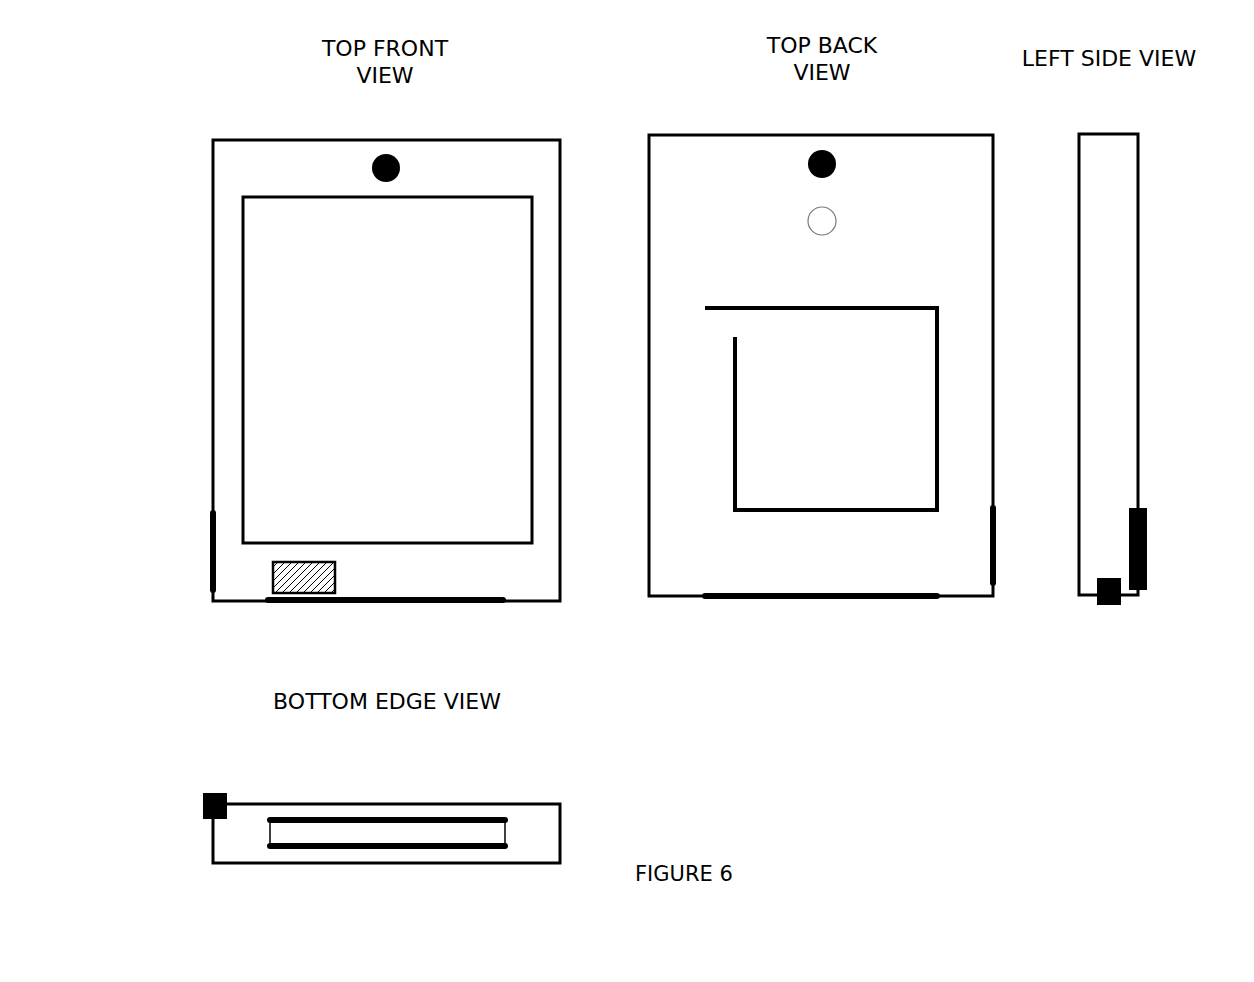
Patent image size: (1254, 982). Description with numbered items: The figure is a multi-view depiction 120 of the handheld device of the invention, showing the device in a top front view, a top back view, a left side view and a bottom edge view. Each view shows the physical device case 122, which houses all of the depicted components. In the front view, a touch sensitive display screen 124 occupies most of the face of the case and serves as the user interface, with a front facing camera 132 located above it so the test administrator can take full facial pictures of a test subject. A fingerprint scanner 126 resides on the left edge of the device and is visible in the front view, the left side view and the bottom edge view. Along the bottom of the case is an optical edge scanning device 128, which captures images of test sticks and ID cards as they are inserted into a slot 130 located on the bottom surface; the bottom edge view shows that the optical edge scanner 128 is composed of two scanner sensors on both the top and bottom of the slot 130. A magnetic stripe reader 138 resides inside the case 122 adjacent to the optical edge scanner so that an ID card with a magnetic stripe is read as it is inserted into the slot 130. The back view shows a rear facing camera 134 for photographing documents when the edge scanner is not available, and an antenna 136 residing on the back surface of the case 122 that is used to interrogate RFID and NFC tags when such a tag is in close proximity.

The three view depiction of handheld device 120 is at (640, 68).
The physical device case 122 is at (301, 135).
The touch sensitive display screen 124 is at (240, 312).
The fingerprint scanner 126 is at (208, 548).
The optical edge scanning device 128 is at (388, 606).
The slot 130 is at (508, 834).
The front facing camera 132 is at (404, 168).
The rear facing camera 134 is at (840, 164).
The antenna 136 is at (879, 304).
The magnetic stripe reader 138 is at (303, 560).